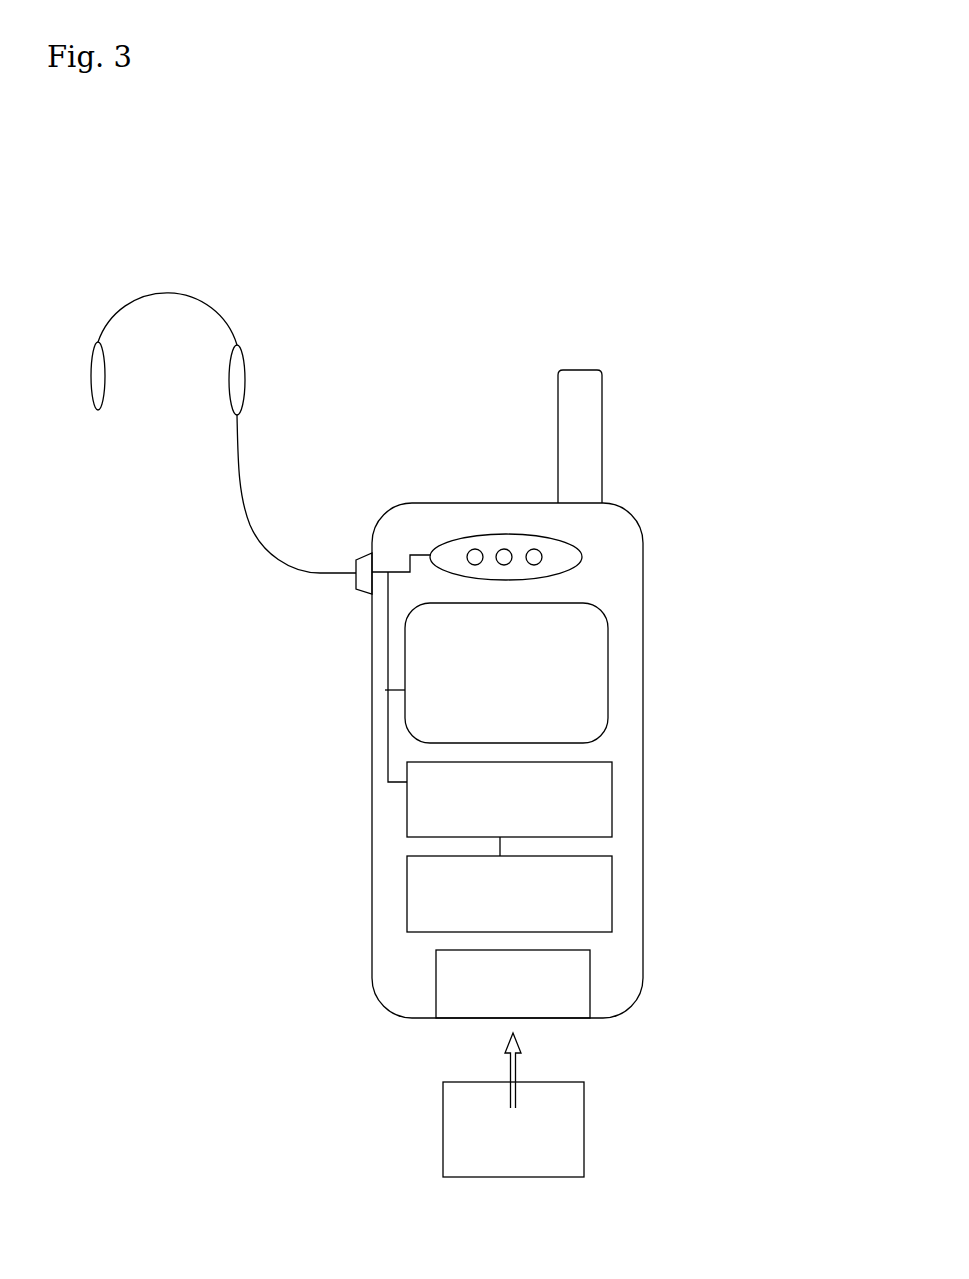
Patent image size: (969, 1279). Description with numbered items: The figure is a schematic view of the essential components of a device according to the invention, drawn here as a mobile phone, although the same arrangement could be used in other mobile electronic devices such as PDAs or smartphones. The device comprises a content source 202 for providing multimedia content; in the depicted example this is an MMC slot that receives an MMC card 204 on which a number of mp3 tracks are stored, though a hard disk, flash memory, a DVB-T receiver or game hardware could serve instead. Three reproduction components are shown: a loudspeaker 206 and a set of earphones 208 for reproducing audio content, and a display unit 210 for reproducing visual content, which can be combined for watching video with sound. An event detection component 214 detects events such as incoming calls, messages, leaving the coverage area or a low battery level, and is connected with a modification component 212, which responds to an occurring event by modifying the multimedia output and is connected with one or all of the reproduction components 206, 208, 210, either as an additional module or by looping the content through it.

The content source 202 is at (543, 999).
The MMC card 204 is at (453, 1142).
The loudspeaker 206 is at (550, 560).
The set of earphones 208 is at (136, 426).
The display unit 210 is at (555, 683).
The modification component 212 is at (432, 780).
The event detection component 214 is at (605, 860).